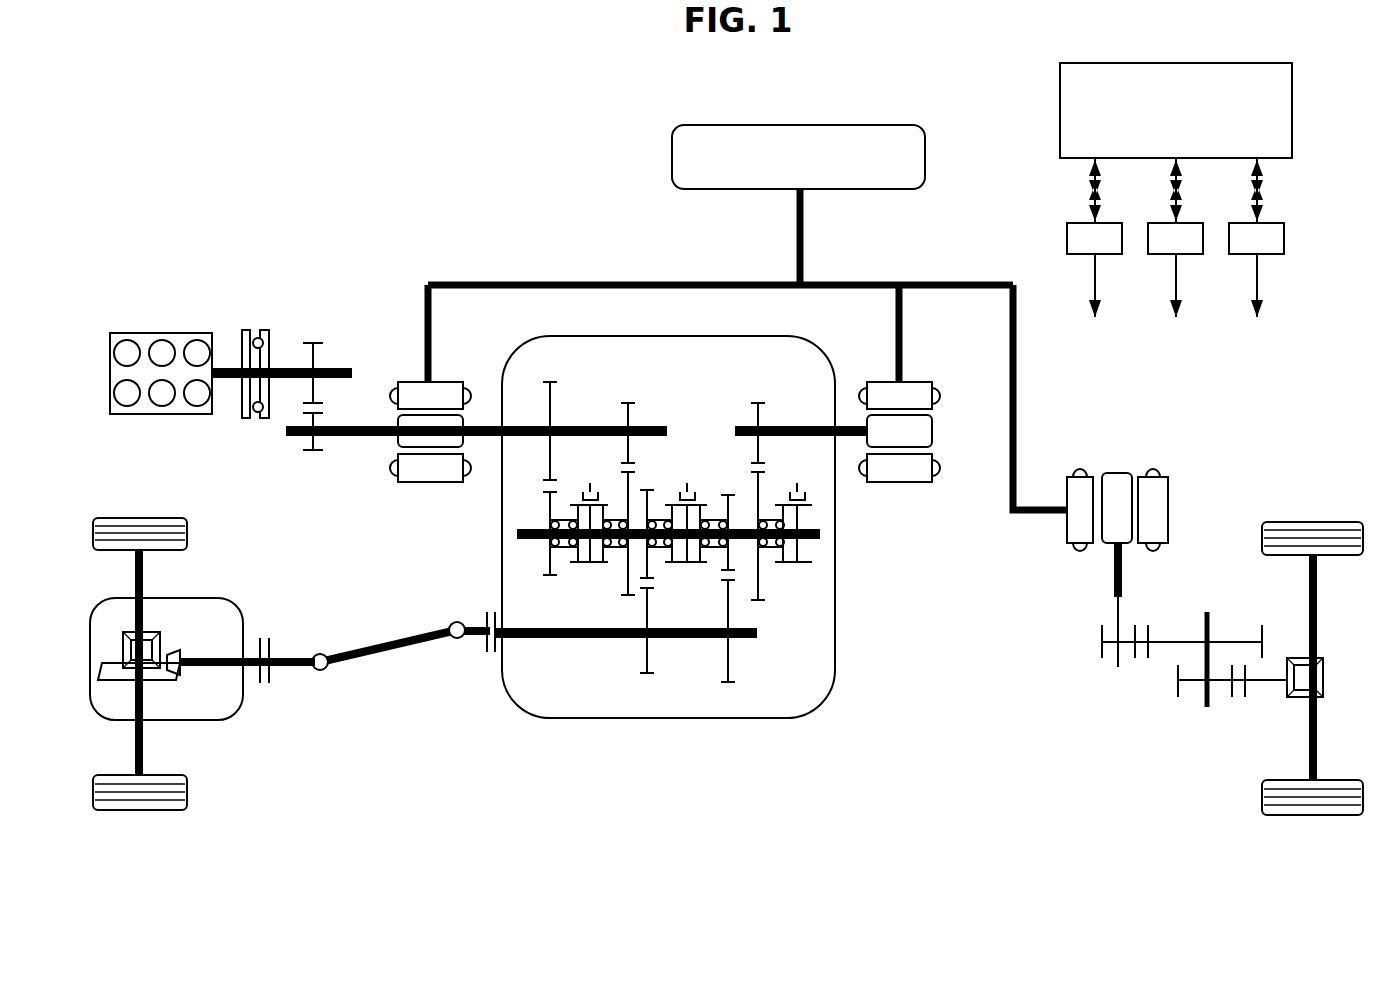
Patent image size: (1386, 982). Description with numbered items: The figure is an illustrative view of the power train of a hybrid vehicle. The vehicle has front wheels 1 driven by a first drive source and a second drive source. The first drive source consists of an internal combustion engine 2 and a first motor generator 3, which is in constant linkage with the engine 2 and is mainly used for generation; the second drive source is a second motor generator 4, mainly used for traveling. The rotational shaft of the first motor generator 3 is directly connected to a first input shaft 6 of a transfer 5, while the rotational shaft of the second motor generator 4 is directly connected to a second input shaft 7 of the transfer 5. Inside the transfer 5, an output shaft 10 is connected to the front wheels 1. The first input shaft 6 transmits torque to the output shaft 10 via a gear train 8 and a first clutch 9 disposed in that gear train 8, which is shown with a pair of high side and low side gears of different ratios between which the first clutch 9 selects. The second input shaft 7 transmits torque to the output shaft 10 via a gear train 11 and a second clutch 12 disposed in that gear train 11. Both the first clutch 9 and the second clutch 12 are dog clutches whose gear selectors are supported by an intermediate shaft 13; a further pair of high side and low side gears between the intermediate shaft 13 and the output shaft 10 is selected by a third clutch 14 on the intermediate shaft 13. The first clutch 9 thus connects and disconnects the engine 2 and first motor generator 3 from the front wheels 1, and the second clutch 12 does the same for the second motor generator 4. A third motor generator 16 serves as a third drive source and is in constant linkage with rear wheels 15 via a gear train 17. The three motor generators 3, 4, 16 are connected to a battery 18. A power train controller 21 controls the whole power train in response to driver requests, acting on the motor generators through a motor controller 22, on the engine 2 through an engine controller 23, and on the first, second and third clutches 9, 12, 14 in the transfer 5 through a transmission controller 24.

The front wheels 1 is at (141, 812).
The internal combustion engine 2 is at (163, 333).
The first motor generator 3 is at (420, 380).
The second motor generator 4 is at (912, 380).
The transfer 5 is at (823, 700).
The first input shaft 6 is at (487, 420).
The second input shaft 7 is at (843, 425).
The gear train 8 is at (520, 505).
The first clutch 9 is at (590, 492).
The output shaft 10 is at (555, 640).
The gear train 11 is at (798, 600).
The second clutch 12 is at (808, 496).
The intermediate shaft 13 is at (522, 545).
The third clutch 14 is at (687, 492).
The rear wheels 15 is at (1308, 522).
The third motor generator 16 is at (1170, 508).
The gear train 17 is at (1163, 682).
The battery 18 is at (672, 152).
The power train controller 21 is at (1292, 113).
The motor controller 22 is at (1105, 254).
The engine controller 23 is at (1186, 254).
The transmission controller 24 is at (1267, 254).